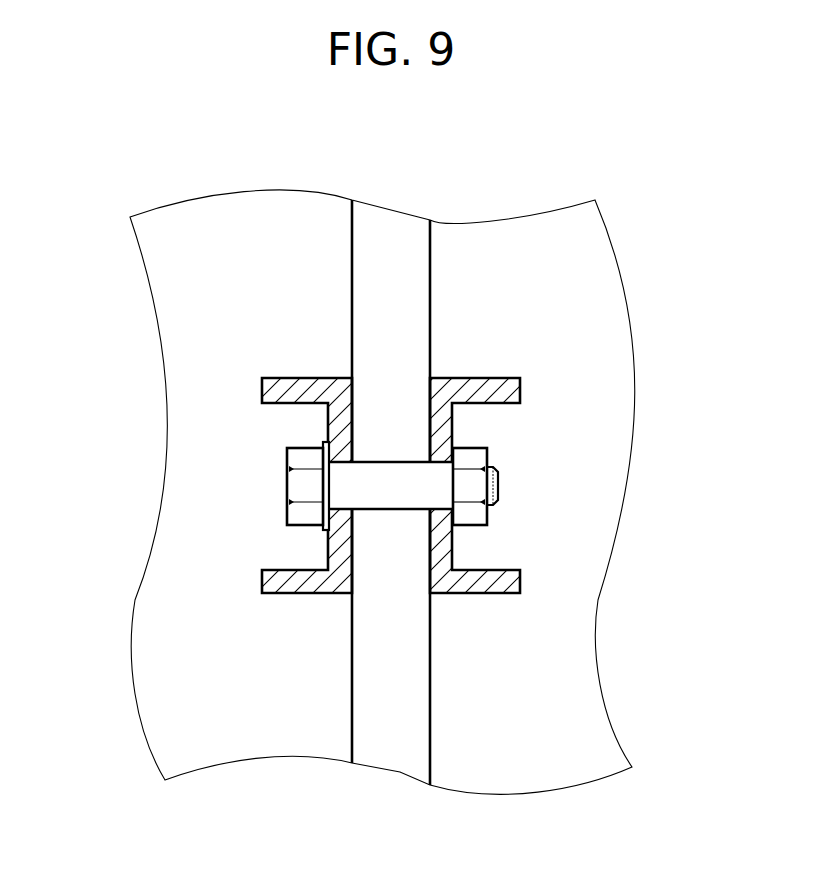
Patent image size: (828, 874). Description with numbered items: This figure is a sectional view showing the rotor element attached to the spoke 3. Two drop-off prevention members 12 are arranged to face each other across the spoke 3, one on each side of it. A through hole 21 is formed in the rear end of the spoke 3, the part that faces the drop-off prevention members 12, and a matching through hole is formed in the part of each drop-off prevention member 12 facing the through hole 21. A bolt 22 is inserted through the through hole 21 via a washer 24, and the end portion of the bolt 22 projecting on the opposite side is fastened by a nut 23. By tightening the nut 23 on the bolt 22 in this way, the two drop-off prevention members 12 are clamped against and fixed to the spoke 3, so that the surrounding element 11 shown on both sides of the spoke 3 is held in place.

The spoke 3 is at (395, 763).
The panel 11 is at (152, 689).
The drop-off prevention member 12 is at (290, 378).
The through hole 21 is at (395, 450).
The bolt 22 is at (300, 510).
The nut 23 is at (465, 510).
The washer 24 is at (330, 527).